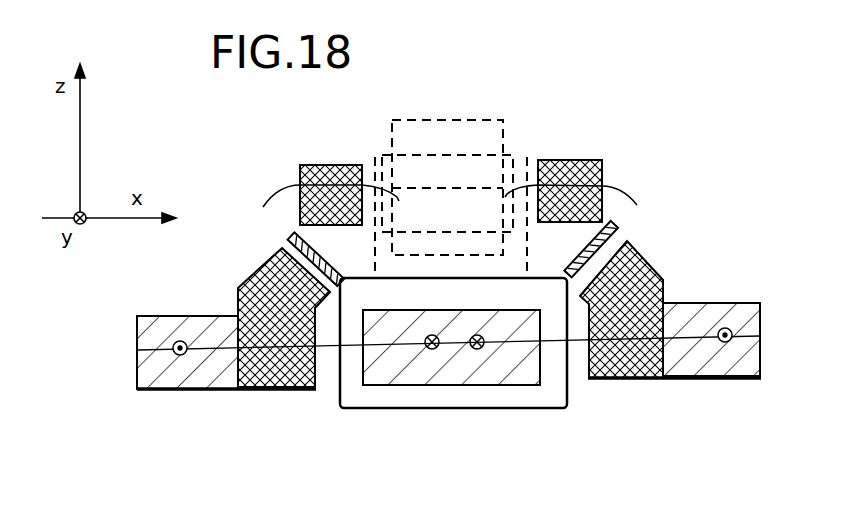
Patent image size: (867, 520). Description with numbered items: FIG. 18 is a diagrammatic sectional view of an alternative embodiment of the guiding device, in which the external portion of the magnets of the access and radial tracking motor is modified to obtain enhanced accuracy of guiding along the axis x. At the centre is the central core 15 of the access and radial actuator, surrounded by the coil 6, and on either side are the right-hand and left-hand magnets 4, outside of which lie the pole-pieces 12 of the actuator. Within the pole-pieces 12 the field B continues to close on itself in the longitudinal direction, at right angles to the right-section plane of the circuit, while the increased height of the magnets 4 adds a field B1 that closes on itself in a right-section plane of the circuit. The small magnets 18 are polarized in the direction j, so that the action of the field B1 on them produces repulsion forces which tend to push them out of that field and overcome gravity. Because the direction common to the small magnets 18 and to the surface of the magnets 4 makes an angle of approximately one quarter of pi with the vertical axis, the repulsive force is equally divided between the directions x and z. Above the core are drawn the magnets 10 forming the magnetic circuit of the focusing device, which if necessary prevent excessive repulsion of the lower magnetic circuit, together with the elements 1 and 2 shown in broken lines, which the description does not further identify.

The first object 1 is at (454, 120).
The second object 2 is at (508, 153).
The magnets 4 is at (262, 391).
The coil 6 is at (413, 412).
The magnets 10 is at (343, 165).
The pole-pieces 12 is at (139, 350).
The central core 15 is at (531, 373).
The small magnets 18 is at (289, 234).
The field B is at (297, 390).
The field B1 is at (648, 246).
The direction j is at (337, 265).